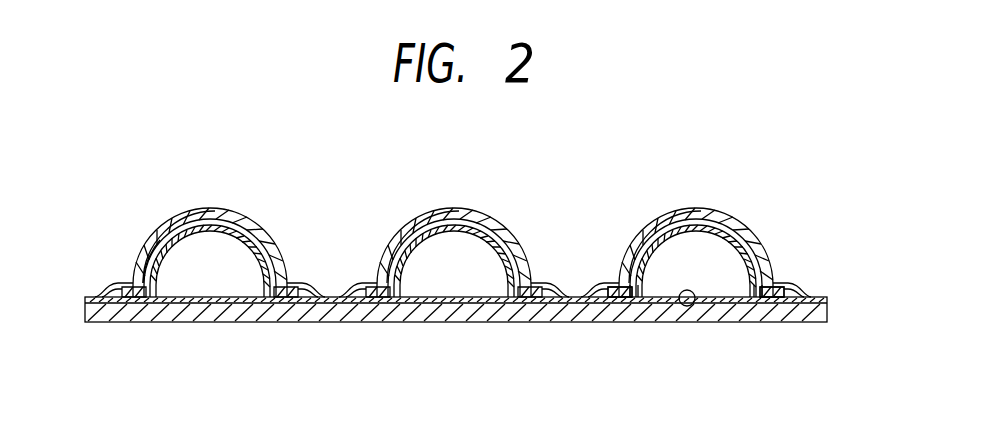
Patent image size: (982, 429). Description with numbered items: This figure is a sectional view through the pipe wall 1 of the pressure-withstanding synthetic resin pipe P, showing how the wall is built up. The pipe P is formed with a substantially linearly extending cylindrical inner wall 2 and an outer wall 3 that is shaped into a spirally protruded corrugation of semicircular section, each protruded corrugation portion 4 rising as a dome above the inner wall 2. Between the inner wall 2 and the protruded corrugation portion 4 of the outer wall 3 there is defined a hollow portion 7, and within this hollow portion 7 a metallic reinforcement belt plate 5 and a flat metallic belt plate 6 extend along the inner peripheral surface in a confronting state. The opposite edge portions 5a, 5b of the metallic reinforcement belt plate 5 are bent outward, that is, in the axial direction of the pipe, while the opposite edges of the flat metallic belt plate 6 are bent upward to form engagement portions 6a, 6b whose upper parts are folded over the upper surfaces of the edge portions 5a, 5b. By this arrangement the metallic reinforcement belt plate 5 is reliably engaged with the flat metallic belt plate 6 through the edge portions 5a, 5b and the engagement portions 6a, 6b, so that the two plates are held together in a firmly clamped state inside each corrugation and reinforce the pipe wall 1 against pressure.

The pipe wall 1 is at (190, 205).
The inner wall 2 is at (421, 322).
The outer wall 3 is at (460, 208).
The protruded corrugation portion 4 is at (715, 212).
The metallic reinforcement belt plate 5 is at (735, 226).
The edge portion of the metallic reinforcement belt plate 5a is at (635, 320).
The edge portion of the metallic reinforcement belt plate 5b is at (768, 320).
The flat metallic belt plate 6 is at (690, 320).
The engagement portion 6a is at (617, 287).
The engagement portion 6b is at (768, 284).
The hollow portion 7 is at (432, 252).
The pressure-withstanding synthetic resin pipe P is at (134, 238).